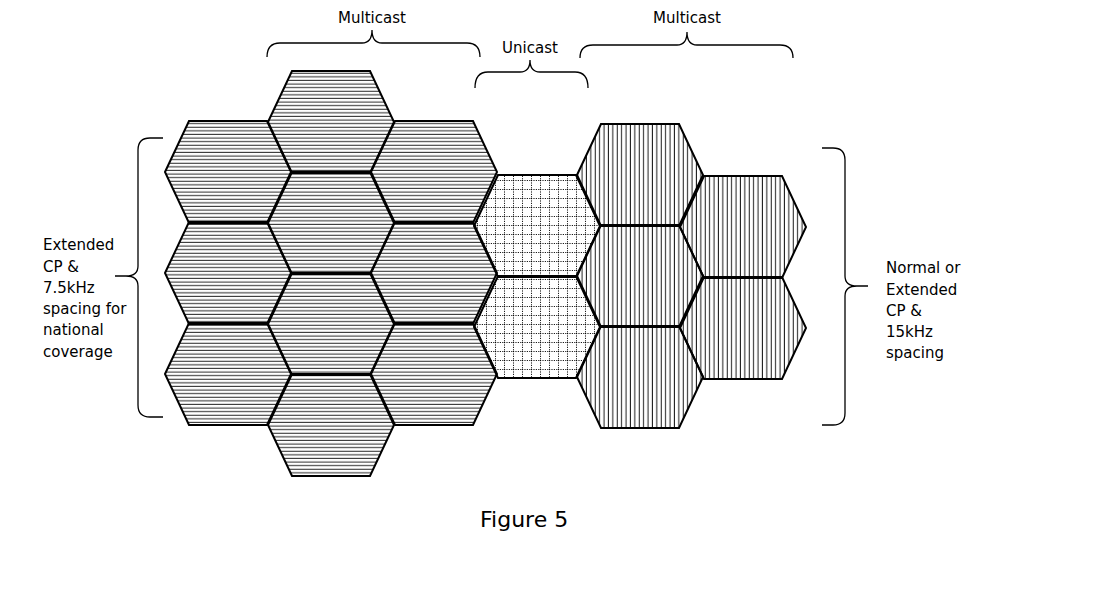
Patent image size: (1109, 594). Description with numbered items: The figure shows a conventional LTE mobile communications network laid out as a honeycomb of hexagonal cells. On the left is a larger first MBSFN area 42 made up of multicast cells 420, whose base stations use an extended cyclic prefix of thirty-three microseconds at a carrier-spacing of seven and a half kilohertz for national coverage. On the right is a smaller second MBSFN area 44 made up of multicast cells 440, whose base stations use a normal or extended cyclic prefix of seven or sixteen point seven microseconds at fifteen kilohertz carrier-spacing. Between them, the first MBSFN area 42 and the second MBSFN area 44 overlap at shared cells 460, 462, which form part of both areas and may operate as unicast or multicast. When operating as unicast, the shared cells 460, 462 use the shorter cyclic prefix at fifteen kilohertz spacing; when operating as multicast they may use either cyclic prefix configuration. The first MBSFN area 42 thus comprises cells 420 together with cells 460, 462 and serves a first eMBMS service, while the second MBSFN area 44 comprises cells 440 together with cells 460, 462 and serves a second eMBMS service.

The first MBSFN area 42 is at (331, 320).
The second MBSFN area 44 is at (691, 331).
The cells 420 is at (331, 273).
The cells 440 is at (691, 276).
The shared cell 460 is at (537, 226).
The shared cell 462 is at (537, 327).